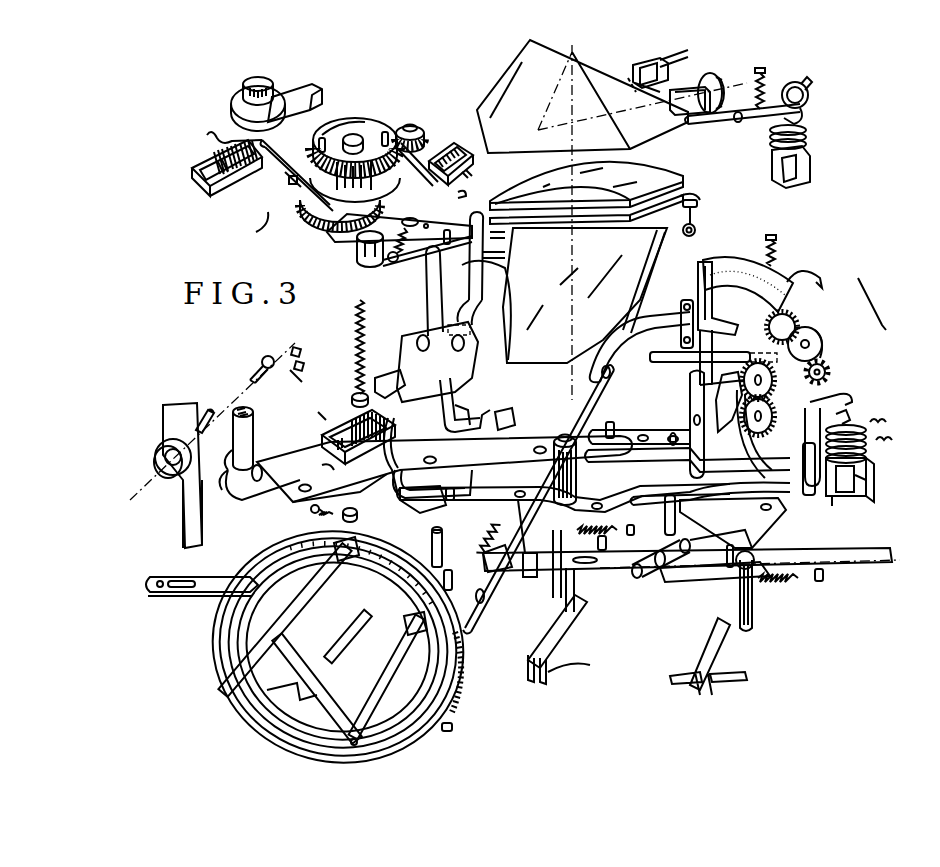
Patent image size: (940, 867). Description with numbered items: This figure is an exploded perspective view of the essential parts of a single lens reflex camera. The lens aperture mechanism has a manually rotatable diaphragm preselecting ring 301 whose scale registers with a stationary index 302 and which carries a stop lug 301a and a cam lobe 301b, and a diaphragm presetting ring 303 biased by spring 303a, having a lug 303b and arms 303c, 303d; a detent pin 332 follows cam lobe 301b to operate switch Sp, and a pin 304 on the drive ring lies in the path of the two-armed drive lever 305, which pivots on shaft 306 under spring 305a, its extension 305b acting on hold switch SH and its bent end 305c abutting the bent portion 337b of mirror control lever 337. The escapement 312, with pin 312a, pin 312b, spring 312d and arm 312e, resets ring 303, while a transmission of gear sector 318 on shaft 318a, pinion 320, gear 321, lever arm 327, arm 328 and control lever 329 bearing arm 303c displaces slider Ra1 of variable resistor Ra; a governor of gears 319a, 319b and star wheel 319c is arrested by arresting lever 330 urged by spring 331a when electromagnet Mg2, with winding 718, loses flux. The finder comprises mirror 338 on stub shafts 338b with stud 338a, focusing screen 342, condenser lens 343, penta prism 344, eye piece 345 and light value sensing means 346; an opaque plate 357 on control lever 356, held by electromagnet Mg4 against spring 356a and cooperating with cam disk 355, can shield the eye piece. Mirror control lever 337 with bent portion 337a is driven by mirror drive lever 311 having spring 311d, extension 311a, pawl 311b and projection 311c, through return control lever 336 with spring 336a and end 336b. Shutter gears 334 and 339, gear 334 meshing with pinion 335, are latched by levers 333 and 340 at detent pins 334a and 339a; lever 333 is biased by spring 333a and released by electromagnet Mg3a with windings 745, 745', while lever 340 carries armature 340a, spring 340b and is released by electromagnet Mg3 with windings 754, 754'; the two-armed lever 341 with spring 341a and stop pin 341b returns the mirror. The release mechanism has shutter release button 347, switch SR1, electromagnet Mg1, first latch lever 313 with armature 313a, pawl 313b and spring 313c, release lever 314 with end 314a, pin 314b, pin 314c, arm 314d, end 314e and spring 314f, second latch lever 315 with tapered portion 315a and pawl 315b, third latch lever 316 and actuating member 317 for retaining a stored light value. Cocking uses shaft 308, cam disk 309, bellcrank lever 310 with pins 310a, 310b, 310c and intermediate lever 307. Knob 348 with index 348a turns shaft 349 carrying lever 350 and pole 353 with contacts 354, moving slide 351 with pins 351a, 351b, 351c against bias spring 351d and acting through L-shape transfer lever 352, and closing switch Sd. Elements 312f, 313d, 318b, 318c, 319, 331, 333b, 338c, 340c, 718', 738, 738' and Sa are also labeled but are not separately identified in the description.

The diaphragm preselecting ring 301 is at (446, 731).
The stop lug 301a is at (405, 650).
The cam lobe 301b is at (298, 708).
The stationary index 302 is at (312, 582).
The diaphragm presetting ring 303 is at (282, 528).
The spring 303a is at (462, 692).
The lug 303b is at (342, 588).
The arm 303c is at (597, 394).
The arm 303d is at (243, 700).
The pin 304 is at (466, 634).
The drive lever 305 is at (548, 572).
The spring 305a is at (602, 550).
The extension 305b is at (578, 598).
The bent end portion 305c is at (506, 414).
The shaft 306 is at (576, 496).
The intermediate lever 307 is at (553, 436).
The shaft 308 is at (248, 414).
The cam disk 309 is at (253, 478).
The bellcrank lever 310 is at (256, 460).
The first pin 310a is at (254, 440).
The pin 310b is at (470, 434).
The pin 310c is at (324, 470).
The mirror drive lever 311 is at (392, 262).
The extension 311a is at (352, 397).
The pawl 311b is at (432, 288).
The projection 311c is at (470, 355).
The spring 311d is at (358, 335).
The escapement 312 is at (616, 430).
The pin 312a is at (617, 422).
The pin 312b is at (745, 470).
The spring 312d is at (590, 475).
The arm 312e is at (775, 445).
The rod 312f is at (812, 492).
The first latch lever 313 is at (425, 505).
The armature 313a is at (390, 412).
The pawl 313b is at (385, 520).
The spring 313c is at (312, 512).
The bar end 313d is at (300, 492).
The release lever 314 is at (520, 512).
The end 314a is at (432, 536).
The pin 314b is at (460, 575).
The pin 314c is at (665, 512).
The arm 314d is at (673, 434).
The end 314e is at (650, 480).
The spring 314f is at (484, 598).
The second latch lever 315 is at (455, 481).
The tapered portion 315a is at (460, 495).
The pawl 315b is at (462, 376).
The third latch lever 316 is at (690, 400).
The actuating member 317 is at (655, 580).
The gear sector 318 is at (712, 372).
The shaft 318a is at (732, 414).
The curved lever 318b is at (640, 348).
The spring 318c is at (782, 262).
The gear train 319 is at (870, 300).
The gear 319a is at (797, 314).
The gear 319b is at (818, 334).
The star wheel 319c is at (830, 366).
The pinion 320 is at (762, 388).
The gear 321 is at (770, 416).
The lever arm 327 is at (770, 512).
The arm 328 is at (681, 318).
The diaphragm presetting ring control lever 329 is at (660, 352).
The arresting lever 330 is at (850, 412).
The bracket 331 is at (835, 420).
The spring 331a is at (840, 394).
The detent pin 332 is at (352, 645).
The front curtain latch lever 333 is at (386, 252).
The spring 333a is at (450, 152).
The gear top 333b is at (330, 132).
The gear 334 is at (385, 120).
The detent pin 334a is at (410, 125).
The pinion 335 is at (445, 143).
The mirror return control lever 336 is at (506, 255).
The spring 336a is at (500, 268).
The end 336b is at (473, 185).
The mirror control lever 337 is at (505, 314).
The rectangularly bent portion 337a is at (390, 374).
The rectangularly bent portion 337b is at (466, 410).
The mirror 338 is at (645, 275).
The stud 338a is at (505, 235).
The stub shafts 338b is at (700, 226).
The bolt 338c is at (702, 202).
The gear 339 is at (332, 228).
The detent pin 339a is at (328, 200).
The rear curtain latch lever 340 is at (315, 200).
The armature 340a is at (258, 130).
The spring 340b is at (288, 183).
The knob 340c is at (366, 262).
The two-armed lever 341 is at (360, 241).
The spring 341a is at (398, 258).
The stop pin 341b is at (447, 230).
The focusing screen 342 is at (690, 194).
The condenser lens 343 is at (660, 176).
The penta prism 344 is at (690, 126).
The eye piece 345 is at (716, 78).
The light value sensing means 346 is at (645, 64).
The shutter release button 347 is at (265, 84).
The knob 348 is at (170, 420).
The index 348a is at (168, 450).
The shaft 349 is at (200, 428).
The lever 350 is at (185, 502).
The slide 351 is at (170, 570).
The pin 351a is at (556, 590).
The pin 351b is at (715, 572).
The pin 351c is at (752, 614).
The bias spring 351d is at (795, 582).
The L-shape transfer lever 352 is at (780, 526).
The pole 353 is at (262, 362).
The contacts 354 is at (302, 360).
The cam disk 355 is at (810, 94).
The control lever 356 is at (806, 112).
The spring 356a is at (770, 88).
The opaque plate 357 is at (690, 90).
The winding 718 is at (866, 460).
The coil lead 718' is at (855, 514).
The magnet block 738 is at (358, 432).
The magnet lead 738' is at (308, 400).
The winding 745 is at (612, 220).
The winding 745' is at (506, 93).
The winding 754 is at (210, 168).
The winding 754' is at (247, 235).
The electromagnet Mg1 is at (322, 436).
The electromagnet Mg2 is at (868, 480).
The electromagnet Mg3 is at (232, 190).
The electromagnet Mg3a is at (490, 170).
The electromagnet Mg4 is at (812, 152).
The variable resistor Ra is at (735, 260).
The slider Ra1 is at (698, 272).
The switch SR1 is at (303, 88).
The switch Sa is at (755, 557).
The switch Sd is at (705, 682).
The hold switch SH is at (550, 672).
The switch Sp is at (476, 555).